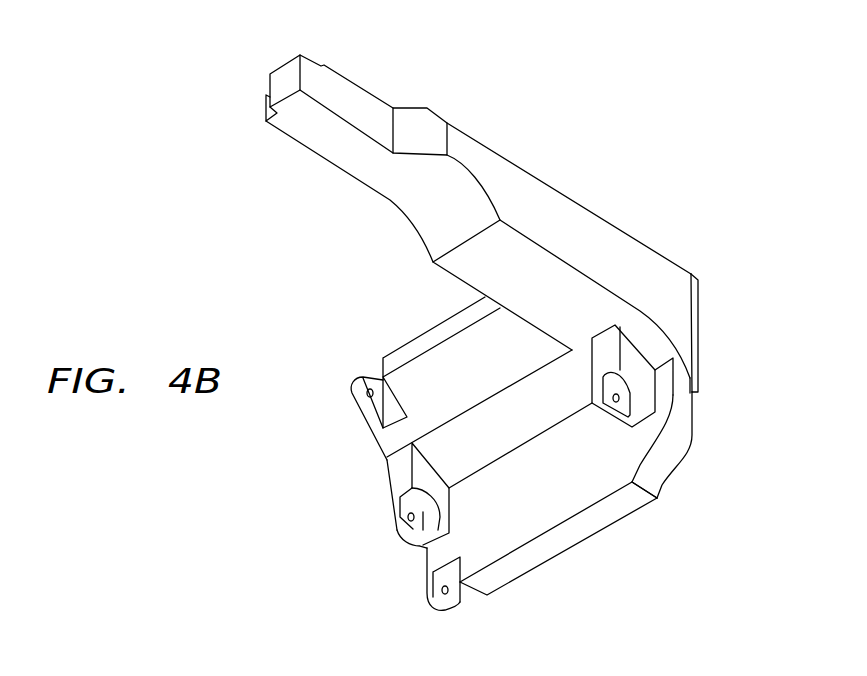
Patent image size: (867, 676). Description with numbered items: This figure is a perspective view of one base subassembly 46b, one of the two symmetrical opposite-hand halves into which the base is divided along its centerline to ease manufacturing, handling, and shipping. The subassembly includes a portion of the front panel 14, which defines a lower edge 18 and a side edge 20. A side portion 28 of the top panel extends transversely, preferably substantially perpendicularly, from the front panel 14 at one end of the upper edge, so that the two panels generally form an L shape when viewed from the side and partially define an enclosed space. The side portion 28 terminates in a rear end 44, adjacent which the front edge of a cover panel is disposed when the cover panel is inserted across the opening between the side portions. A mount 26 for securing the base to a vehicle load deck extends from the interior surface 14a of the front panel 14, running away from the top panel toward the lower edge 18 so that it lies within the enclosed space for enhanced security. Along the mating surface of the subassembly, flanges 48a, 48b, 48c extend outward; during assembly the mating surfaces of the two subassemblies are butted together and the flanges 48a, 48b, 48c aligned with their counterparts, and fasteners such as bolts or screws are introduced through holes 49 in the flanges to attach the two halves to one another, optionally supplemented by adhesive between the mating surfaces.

The rear end 44 is at (284, 86).
The side portion 28 is at (517, 187).
The base subassembly 46b is at (615, 252).
The hole 49 is at (368, 389).
The flange 48a is at (358, 420).
The flange 48b is at (392, 521).
The flange 48c is at (427, 601).
The interior surface 14a is at (505, 525).
The mount 26 is at (603, 360).
The side edge 20 is at (688, 416).
The front panel 14 is at (670, 473).
The lower edge 18 is at (627, 500).